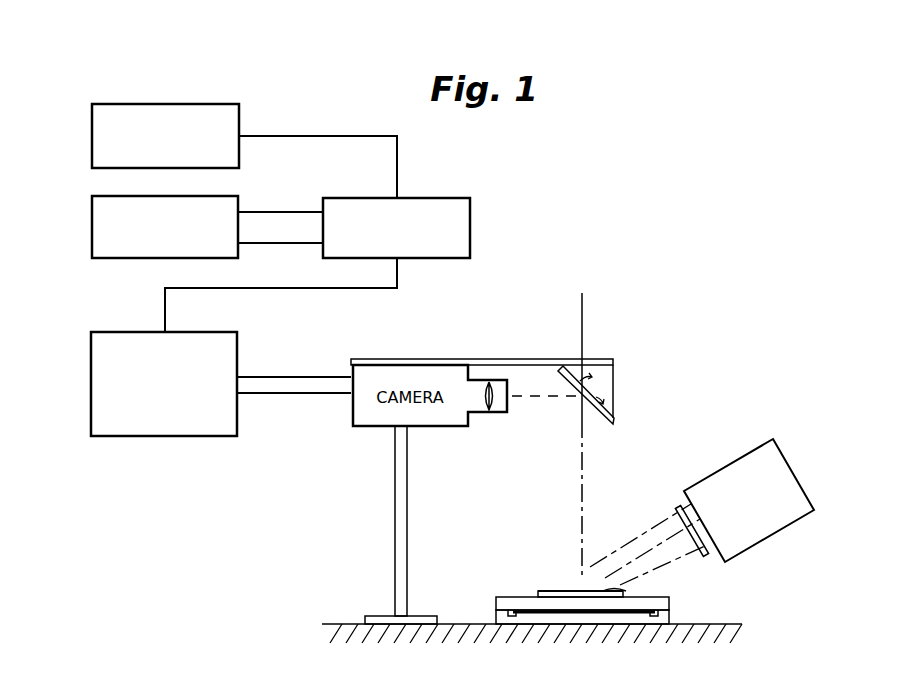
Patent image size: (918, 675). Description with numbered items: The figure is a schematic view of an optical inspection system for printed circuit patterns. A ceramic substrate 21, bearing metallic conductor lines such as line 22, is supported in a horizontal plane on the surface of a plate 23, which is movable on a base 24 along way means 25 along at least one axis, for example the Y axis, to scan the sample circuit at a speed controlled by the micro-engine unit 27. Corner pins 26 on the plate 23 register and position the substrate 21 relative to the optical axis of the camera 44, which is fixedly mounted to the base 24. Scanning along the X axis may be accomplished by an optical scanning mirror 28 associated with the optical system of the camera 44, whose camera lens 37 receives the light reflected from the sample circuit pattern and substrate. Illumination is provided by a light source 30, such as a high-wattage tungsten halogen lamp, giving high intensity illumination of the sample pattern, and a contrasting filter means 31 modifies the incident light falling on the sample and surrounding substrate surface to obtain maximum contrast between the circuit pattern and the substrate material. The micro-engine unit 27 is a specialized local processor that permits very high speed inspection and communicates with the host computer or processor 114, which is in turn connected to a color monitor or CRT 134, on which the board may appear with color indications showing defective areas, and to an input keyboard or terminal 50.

The input keyboard or terminal 50 is at (176, 104).
The color monitor or CRT 134 is at (92, 223).
The host computer or processor 114 is at (471, 228).
The micro-engine unit 27 is at (195, 437).
The camera 44 is at (427, 359).
The camera lens 37 is at (493, 383).
The optical scanning mirror 28 is at (612, 401).
The light source 30 is at (743, 455).
The contrasting filter means 31 is at (674, 510).
The corner pins 26 is at (625, 590).
The ceramic substrate 21 is at (542, 593).
The line 22 is at (558, 590).
The plate 23 is at (495, 604).
The base 24 is at (670, 612).
The way means 25 is at (513, 614).